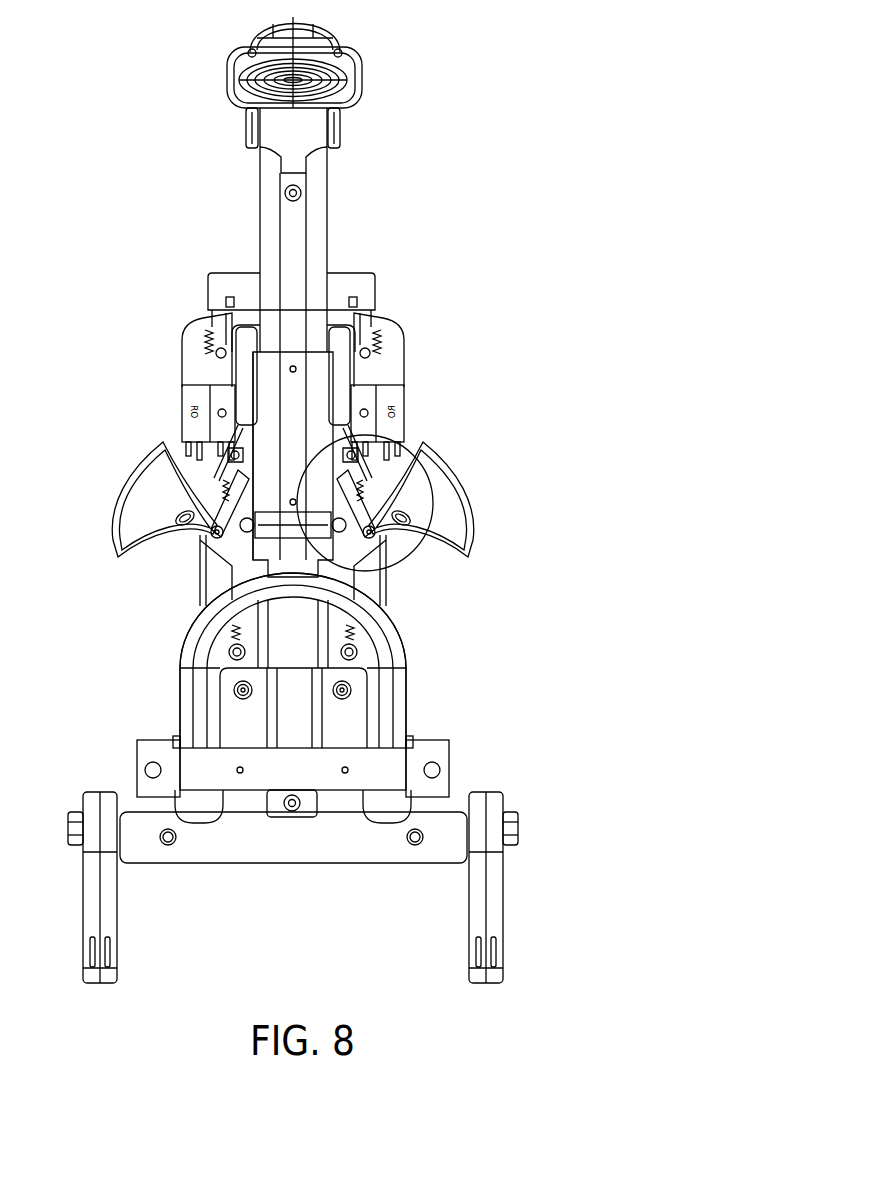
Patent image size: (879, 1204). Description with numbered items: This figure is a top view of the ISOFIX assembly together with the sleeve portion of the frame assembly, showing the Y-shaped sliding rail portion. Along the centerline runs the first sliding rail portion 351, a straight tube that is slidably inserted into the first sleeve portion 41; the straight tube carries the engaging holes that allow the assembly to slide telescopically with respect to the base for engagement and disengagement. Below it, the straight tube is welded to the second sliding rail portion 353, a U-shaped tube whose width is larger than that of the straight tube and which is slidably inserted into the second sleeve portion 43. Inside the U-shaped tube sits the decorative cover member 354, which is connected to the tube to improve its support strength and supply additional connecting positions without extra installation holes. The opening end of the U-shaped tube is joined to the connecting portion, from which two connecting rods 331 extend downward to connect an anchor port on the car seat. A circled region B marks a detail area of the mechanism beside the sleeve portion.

The first sleeve portion 41 is at (332, 233).
The first sliding rail portion 351 is at (295, 290).
The second sleeve portion 43 is at (180, 658).
The decorative cover member 354 is at (240, 730).
The second sliding rail portion 353 is at (383, 682).
The detail region B is at (407, 548).
The connecting rod 331 is at (492, 902).